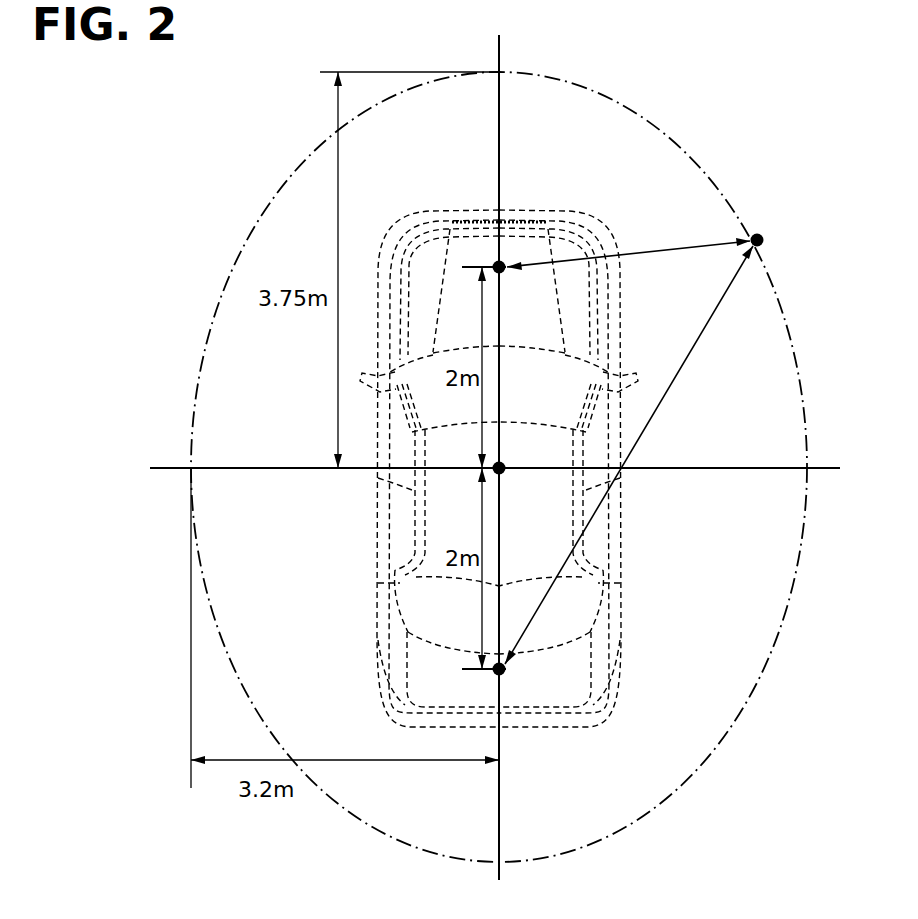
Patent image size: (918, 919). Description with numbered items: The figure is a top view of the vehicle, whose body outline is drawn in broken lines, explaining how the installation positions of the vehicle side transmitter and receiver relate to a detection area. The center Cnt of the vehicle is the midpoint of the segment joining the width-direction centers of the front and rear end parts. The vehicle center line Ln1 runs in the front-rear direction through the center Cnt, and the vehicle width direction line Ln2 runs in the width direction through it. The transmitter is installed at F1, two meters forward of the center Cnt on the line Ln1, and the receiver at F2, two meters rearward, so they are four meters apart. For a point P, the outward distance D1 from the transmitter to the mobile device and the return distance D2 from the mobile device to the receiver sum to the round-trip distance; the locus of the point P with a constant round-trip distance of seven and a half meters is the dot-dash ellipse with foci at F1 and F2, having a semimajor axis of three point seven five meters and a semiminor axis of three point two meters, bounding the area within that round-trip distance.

The vehicle center line Ln1 is at (499, 43).
The vehicle width direction line Ln2 is at (160, 468).
The installation position of the vehicle side transmitter F1 is at (502, 284).
The installation position of the vehicle side receiver F2 is at (502, 680).
The center of the vehicle Cnt is at (523, 485).
The point P is at (771, 242).
The outward distance D1 is at (628, 243).
The return distance D2 is at (629, 455).